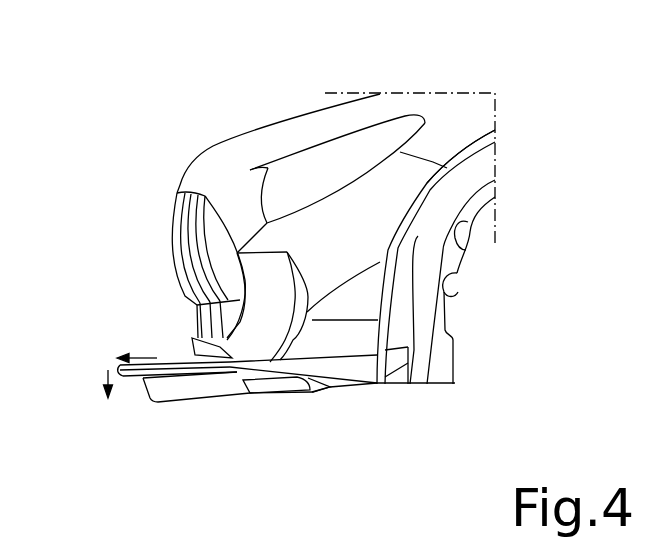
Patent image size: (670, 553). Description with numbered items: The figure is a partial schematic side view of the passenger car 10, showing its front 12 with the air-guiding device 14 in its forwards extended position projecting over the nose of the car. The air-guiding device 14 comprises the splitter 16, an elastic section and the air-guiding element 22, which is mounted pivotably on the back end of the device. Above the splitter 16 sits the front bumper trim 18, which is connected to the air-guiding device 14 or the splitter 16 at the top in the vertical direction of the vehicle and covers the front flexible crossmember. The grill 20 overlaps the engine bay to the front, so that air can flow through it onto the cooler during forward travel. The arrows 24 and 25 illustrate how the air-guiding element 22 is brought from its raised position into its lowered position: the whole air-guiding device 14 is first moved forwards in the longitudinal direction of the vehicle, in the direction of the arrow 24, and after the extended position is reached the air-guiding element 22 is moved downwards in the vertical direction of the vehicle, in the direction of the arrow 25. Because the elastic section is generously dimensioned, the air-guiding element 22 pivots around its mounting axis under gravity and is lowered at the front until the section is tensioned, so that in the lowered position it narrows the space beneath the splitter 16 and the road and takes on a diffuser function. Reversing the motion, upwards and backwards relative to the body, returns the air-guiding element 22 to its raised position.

The passenger car 10 is at (212, 94).
The front 12 is at (407, 411).
The air-guiding device 14 is at (306, 410).
The splitter 16 is at (176, 345).
The front bumper trim 18 is at (380, 260).
The grill 20 is at (190, 238).
The air-guiding element 22 is at (170, 430).
The arrow 24 is at (135, 358).
The arrow 25 is at (108, 380).